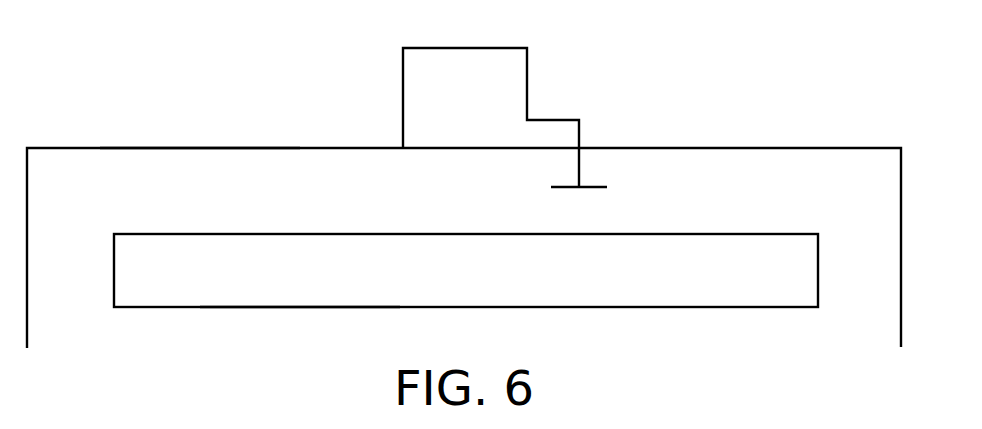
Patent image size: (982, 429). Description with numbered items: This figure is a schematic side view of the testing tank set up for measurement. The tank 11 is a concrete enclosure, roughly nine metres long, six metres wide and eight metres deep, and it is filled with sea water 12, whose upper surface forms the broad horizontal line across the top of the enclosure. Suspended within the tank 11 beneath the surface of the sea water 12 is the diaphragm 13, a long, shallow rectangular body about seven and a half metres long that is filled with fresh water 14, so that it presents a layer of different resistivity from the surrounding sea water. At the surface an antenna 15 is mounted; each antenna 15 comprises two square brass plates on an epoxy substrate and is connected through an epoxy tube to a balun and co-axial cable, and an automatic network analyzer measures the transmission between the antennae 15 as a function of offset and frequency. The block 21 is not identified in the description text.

The tank 11 is at (66, 347).
The sea water 12 is at (173, 158).
The diaphragm 13 is at (292, 309).
The fresh water 14 is at (481, 281).
The antenna 15 is at (607, 187).
The block mounted on top wall 21 is at (403, 89).